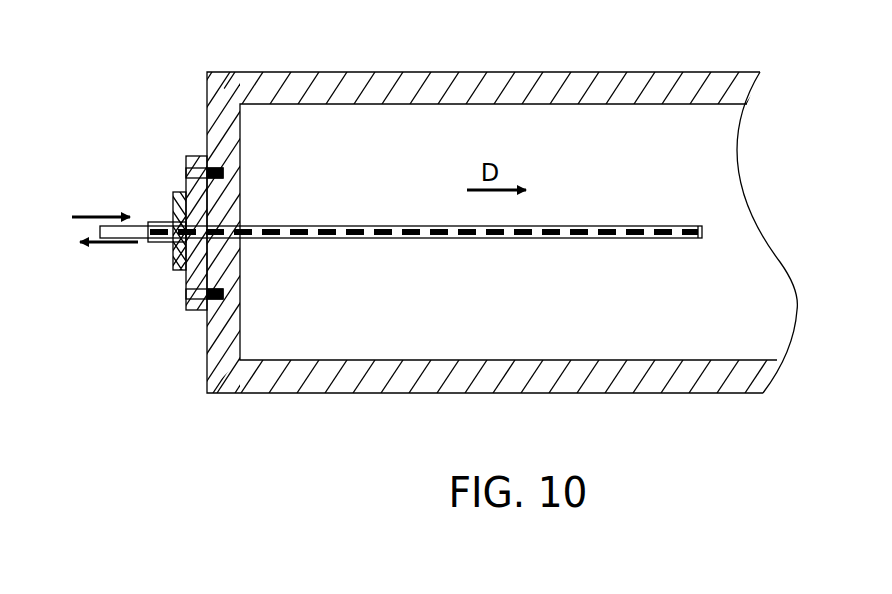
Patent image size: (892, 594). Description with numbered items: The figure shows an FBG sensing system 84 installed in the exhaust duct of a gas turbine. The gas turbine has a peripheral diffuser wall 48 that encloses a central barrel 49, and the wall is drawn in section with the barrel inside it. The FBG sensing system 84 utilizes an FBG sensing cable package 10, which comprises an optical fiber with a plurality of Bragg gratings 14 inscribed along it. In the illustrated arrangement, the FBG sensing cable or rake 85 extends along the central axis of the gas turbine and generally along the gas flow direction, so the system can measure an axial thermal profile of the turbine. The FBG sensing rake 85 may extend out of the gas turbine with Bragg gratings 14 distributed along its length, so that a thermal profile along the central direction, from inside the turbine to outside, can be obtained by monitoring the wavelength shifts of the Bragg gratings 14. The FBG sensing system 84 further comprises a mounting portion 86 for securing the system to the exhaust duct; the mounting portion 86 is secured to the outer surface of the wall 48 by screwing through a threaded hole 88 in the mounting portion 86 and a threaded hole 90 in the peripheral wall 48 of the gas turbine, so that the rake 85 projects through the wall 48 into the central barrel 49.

The diffuser wall 48 is at (215, 78).
The central barrel 49 is at (295, 342).
The mounting portion 86 is at (197, 163).
The threaded hole 88 is at (186, 295).
The threaded hole 90 is at (226, 293).
The Bragg grating 14 is at (172, 231).
The FBG sensing cable package 10 is at (473, 239).
The FBG sensing rake 85 is at (553, 240).
The FBG sensing system 84 is at (132, 267).